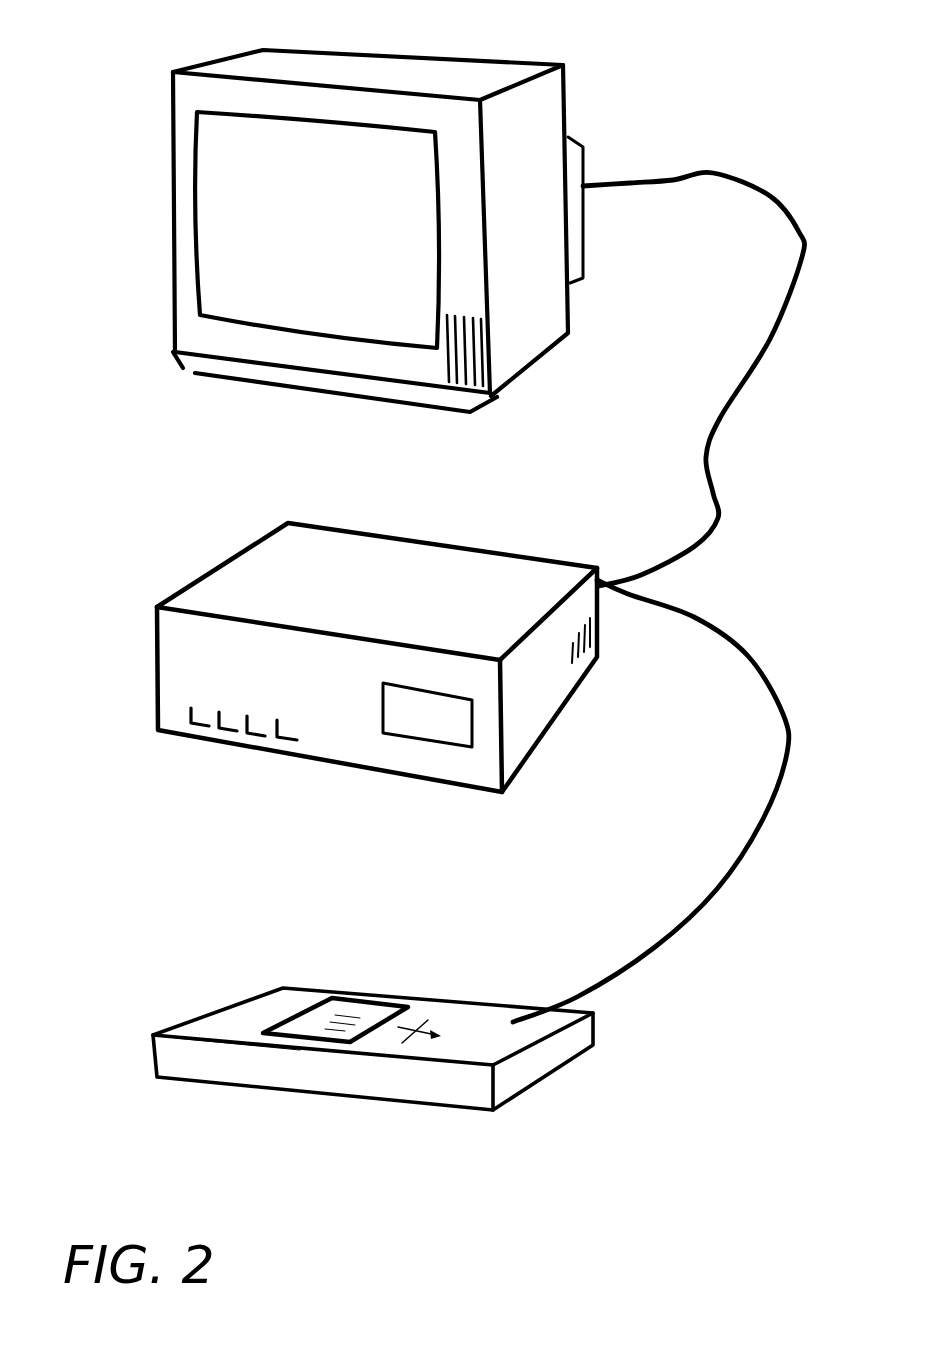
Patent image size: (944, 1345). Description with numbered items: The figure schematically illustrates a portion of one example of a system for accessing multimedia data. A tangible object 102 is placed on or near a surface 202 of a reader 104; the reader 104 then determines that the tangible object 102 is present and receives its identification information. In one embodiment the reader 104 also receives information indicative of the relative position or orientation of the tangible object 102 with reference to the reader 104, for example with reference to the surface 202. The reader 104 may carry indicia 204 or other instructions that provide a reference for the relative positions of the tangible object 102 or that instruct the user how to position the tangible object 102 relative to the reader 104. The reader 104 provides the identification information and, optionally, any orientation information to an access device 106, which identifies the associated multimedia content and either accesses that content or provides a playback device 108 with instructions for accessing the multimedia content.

The playback device 108 is at (481, 60).
The access device 106 is at (217, 572).
The reader 104 is at (321, 1092).
The tangible object 102 is at (343, 1010).
The surface 202 is at (246, 1008).
The indicia 204 is at (435, 1017).